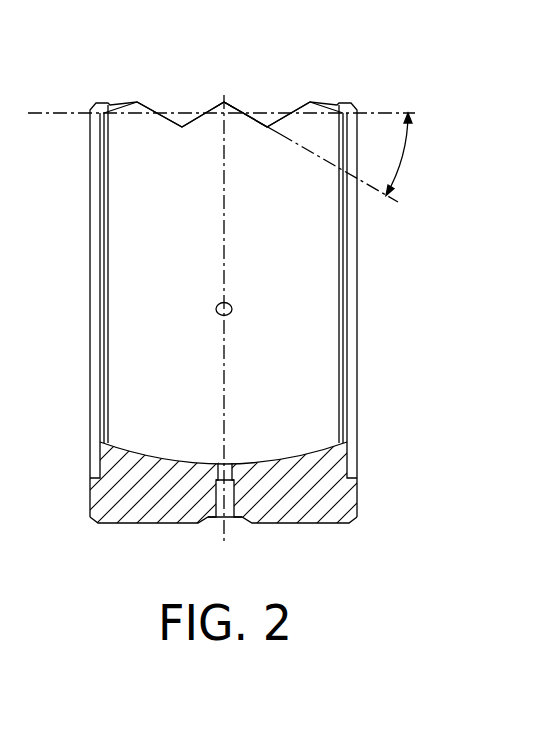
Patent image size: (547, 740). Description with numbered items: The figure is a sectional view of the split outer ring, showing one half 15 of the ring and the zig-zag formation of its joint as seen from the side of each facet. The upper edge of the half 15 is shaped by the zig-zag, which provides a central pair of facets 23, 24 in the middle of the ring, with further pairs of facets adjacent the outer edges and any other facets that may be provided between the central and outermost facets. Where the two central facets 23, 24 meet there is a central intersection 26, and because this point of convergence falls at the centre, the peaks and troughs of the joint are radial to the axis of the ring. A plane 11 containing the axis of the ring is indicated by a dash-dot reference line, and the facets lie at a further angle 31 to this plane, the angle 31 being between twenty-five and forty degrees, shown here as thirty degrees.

The central axis / reference plane 11 is at (42, 113).
The side wall of cup 15 is at (90, 318).
The notch valley 23 is at (193, 115).
The inclined edge surface 24 is at (258, 118).
The apex 26 is at (226, 101).
The 30 degree angle 31 is at (405, 162).